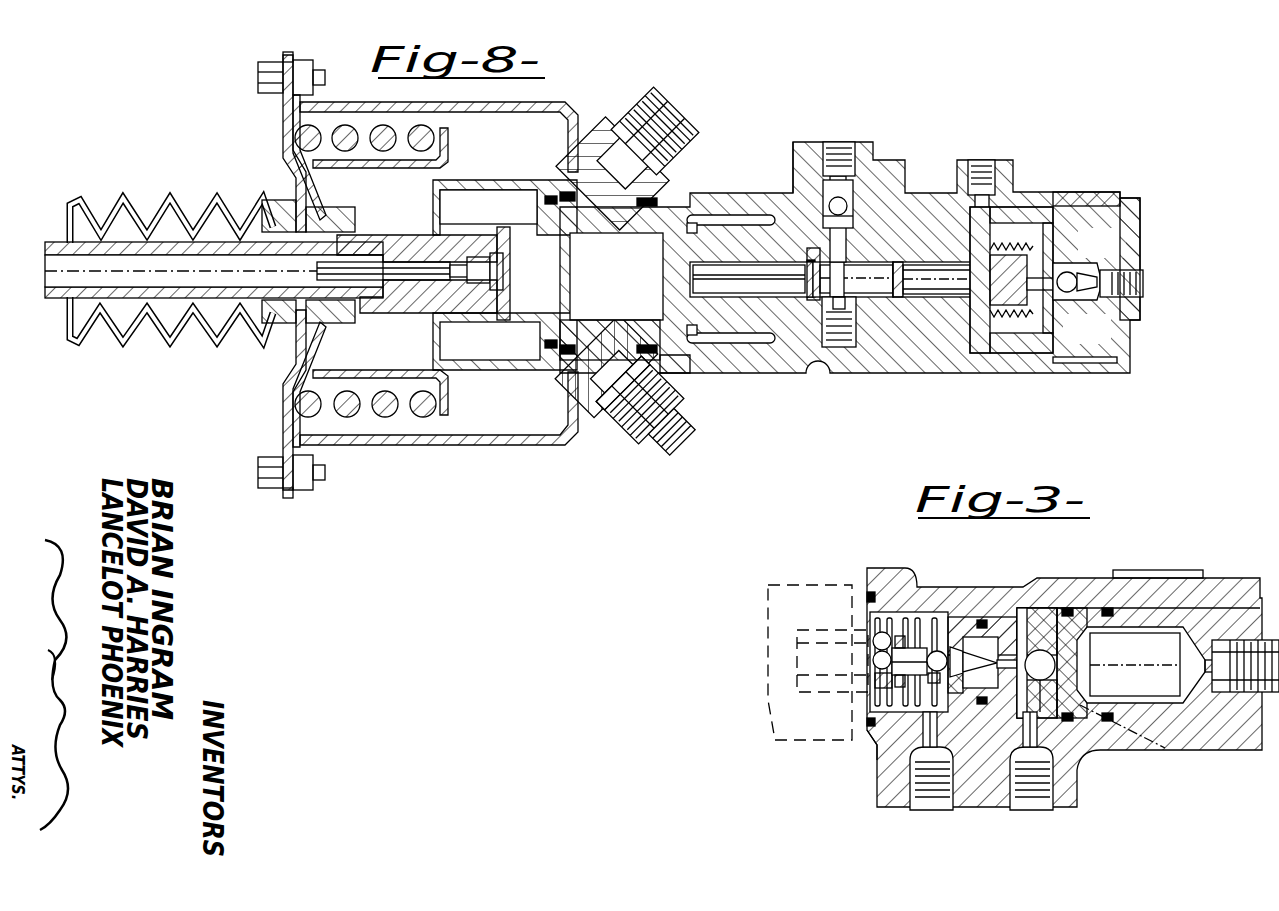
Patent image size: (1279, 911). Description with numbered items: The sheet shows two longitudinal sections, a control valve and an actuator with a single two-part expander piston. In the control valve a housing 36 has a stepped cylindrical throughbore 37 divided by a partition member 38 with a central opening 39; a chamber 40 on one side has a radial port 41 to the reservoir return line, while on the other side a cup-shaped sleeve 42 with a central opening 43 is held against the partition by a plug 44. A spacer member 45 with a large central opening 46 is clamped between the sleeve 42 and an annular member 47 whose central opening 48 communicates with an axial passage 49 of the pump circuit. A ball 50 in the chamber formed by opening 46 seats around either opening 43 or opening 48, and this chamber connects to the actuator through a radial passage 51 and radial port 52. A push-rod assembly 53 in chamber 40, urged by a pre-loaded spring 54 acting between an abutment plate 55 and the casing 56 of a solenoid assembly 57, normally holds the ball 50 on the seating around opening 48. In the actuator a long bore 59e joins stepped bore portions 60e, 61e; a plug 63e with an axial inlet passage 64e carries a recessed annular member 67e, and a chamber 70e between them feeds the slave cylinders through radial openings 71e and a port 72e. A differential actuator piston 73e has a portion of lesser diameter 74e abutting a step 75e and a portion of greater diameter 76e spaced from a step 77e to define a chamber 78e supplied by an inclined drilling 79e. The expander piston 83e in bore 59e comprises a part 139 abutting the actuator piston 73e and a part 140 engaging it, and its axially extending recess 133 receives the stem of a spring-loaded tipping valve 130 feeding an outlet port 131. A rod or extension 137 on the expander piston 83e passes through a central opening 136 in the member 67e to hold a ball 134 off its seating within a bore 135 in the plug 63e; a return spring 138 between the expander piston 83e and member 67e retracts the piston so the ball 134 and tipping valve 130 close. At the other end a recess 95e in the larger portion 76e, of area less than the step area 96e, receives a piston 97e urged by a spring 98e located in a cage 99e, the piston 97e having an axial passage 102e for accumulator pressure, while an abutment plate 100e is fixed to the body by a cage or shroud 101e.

In FIG. 8, the abutment plate 100e is at (288, 135).
In FIG. 8, the cage or shroud 101e is at (468, 440).
In FIG. 8, the axial passage 102e is at (393, 262).
In FIG. 8, the bore portion 61e is at (467, 200).
In FIG. 8, the step area 96e is at (573, 200).
In FIG. 8, the piston 97e is at (500, 307).
In FIG. 8, the spring 98e is at (430, 413).
In FIG. 8, the cage 99e is at (370, 380).
In FIG. 8, the recess 95e is at (595, 271).
In FIG. 8, the portion of greater diameter 76e is at (570, 343).
In FIG. 8, the chamber 78e is at (572, 352).
In FIG. 8, the inclined drilling 79e is at (608, 368).
In FIG. 8, the step 77e is at (663, 462).
In FIG. 8, the portion of lesser diameter 74e is at (688, 412).
In FIG. 8, the bore portion 60e is at (620, 198).
In FIG. 8, the step 75e is at (692, 198).
In FIG. 8, the expander piston 83e is at (713, 270).
In FIG. 8, the part of expander piston 139 is at (747, 270).
In FIG. 8, the tipping valve 130 is at (870, 143).
In FIG. 8, the part of expander piston 140 is at (923, 272).
In FIG. 8, the recess 133 is at (877, 296).
In FIG. 8, the outlet port 131 is at (837, 340).
In FIG. 8, the bore 59e is at (777, 300).
In FIG. 8, the actuator piston 73e is at (665, 335).
In FIG. 8, the port 72e is at (987, 197).
In FIG. 8, the return spring 138 is at (1015, 227).
In FIG. 8, the radial openings 71e is at (983, 327).
In FIG. 8, the chamber 70e is at (1023, 330).
In FIG. 8, the central opening 136 is at (1043, 340).
In FIG. 8, the bore 135 is at (1070, 355).
In FIG. 8, the ball 134 is at (1085, 302).
In FIG. 8, the rod or extension 137 is at (1102, 204).
In FIG. 8, the annular member 67e is at (1105, 225).
In FIG. 8, the plug 63e is at (1079, 256).
In FIG. 8, the axial inlet passage 64e is at (1072, 294).
In FIG. 3, the housing 36 is at (1140, 590).
In FIG. 3, the stepped cylindrical throughbore 37 is at (1067, 625).
In FIG. 3, the partition member 38 is at (957, 622).
In FIG. 3, the central opening 39 is at (975, 670).
In FIG. 3, the chamber 40 is at (893, 620).
In FIG. 3, the radial port 41 is at (923, 715).
In FIG. 3, the cup-shaped sleeve 42 is at (1024, 627).
In FIG. 3, the central opening 43 is at (985, 688).
In FIG. 3, the plug 44 is at (1210, 630).
In FIG. 3, the spacer member 45 is at (1055, 720).
In FIG. 3, the central opening 46 is at (1113, 702).
In FIG. 3, the annular member 47 is at (1092, 610).
In FIG. 3, the central opening 48 is at (1160, 722).
In FIG. 3, the axial passage 49 is at (1163, 662).
In FIG. 3, the ball 50 is at (1042, 690).
In FIG. 3, the radial passage 51 is at (1008, 702).
In FIG. 3, the radial port 52 is at (1030, 747).
In FIG. 3, the push-rod assembly 53 is at (877, 745).
In FIG. 3, the pre-loaded spring 54 is at (903, 643).
In FIG. 3, the abutment plate 55 is at (937, 663).
In FIG. 3, the casing 56 is at (800, 610).
In FIG. 3, the solenoid assembly 57 is at (818, 692).